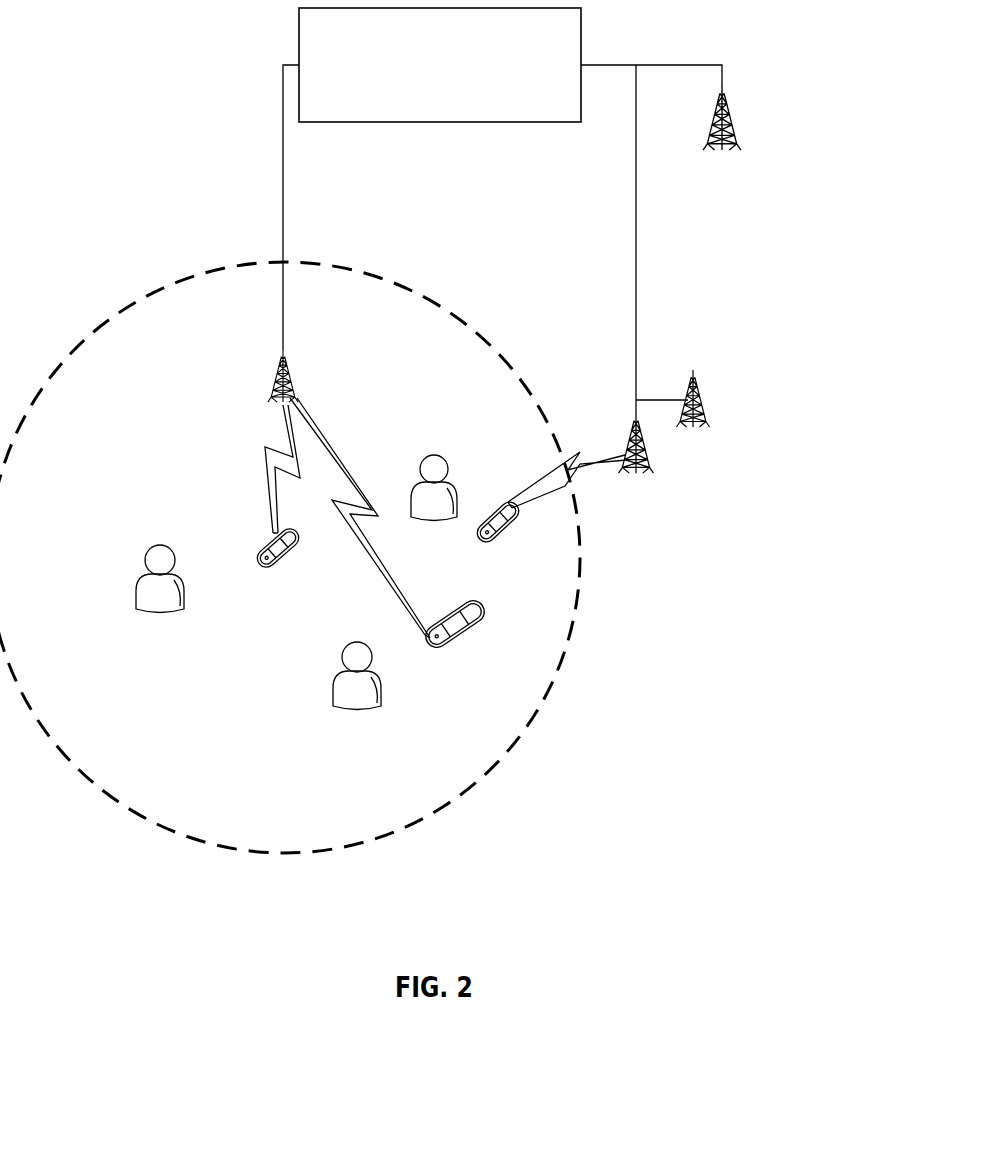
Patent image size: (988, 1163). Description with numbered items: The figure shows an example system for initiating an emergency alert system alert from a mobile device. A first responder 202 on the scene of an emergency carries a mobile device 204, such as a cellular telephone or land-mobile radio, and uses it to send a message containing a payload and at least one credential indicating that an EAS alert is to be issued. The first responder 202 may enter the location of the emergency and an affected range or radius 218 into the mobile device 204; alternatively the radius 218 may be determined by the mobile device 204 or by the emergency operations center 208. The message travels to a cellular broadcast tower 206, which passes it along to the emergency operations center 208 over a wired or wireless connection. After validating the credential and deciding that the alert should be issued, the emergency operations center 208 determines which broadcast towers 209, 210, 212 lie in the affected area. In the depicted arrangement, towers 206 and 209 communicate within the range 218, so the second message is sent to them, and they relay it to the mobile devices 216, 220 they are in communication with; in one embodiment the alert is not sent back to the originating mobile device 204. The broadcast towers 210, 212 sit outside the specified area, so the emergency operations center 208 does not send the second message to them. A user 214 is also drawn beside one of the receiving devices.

The first responder 202 is at (101, 635).
The mobile device 204 is at (224, 604).
The cellular broadcast tower 206 is at (273, 392).
The emergency operations center 208 is at (343, 36).
The broadcast tower 209 is at (629, 445).
The broadcast tower 210 is at (695, 380).
The broadcast tower 212 is at (830, 77).
The user 214 is at (428, 548).
The mobile device 216 is at (443, 576).
The radius 218 is at (155, 292).
The mobile device 220 is at (401, 688).